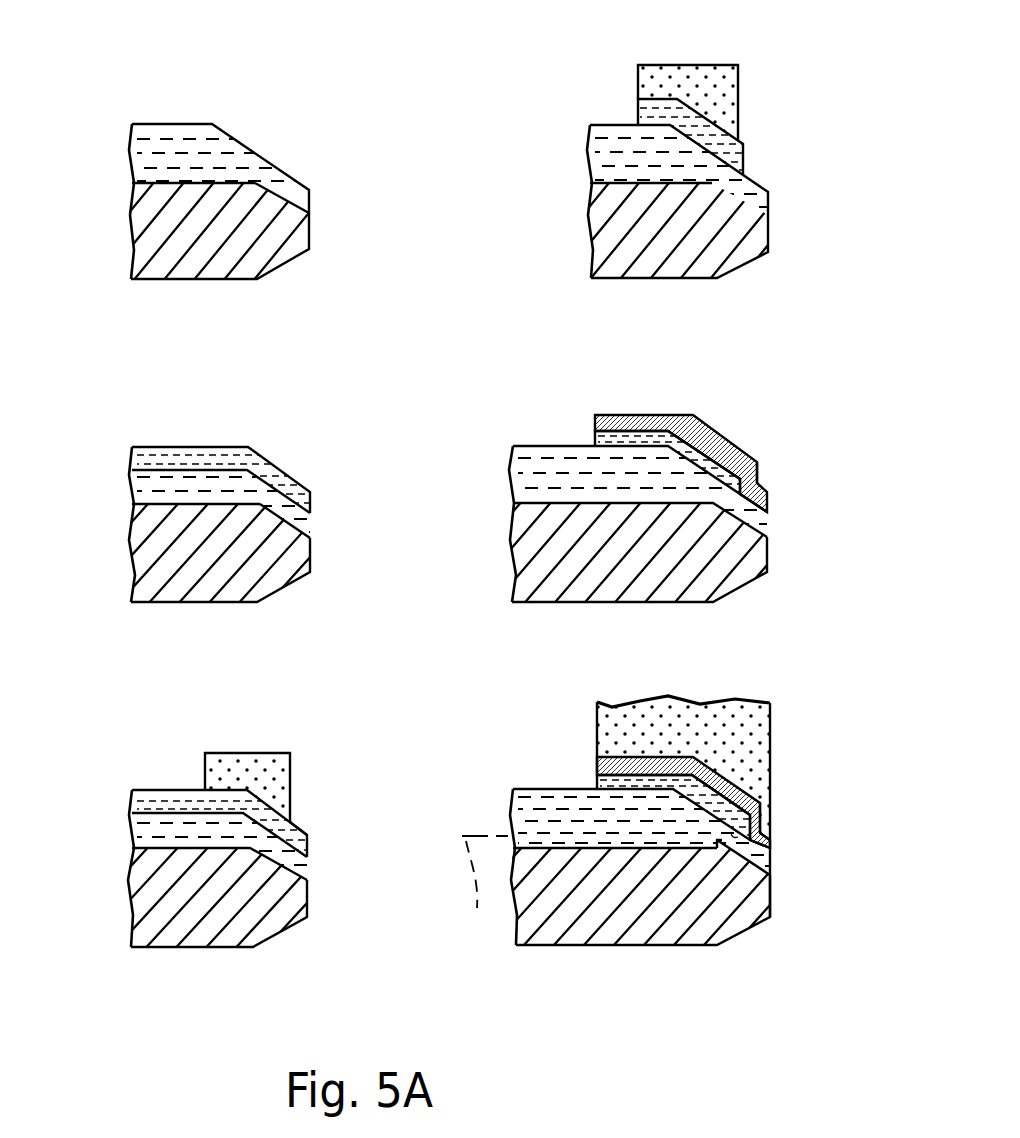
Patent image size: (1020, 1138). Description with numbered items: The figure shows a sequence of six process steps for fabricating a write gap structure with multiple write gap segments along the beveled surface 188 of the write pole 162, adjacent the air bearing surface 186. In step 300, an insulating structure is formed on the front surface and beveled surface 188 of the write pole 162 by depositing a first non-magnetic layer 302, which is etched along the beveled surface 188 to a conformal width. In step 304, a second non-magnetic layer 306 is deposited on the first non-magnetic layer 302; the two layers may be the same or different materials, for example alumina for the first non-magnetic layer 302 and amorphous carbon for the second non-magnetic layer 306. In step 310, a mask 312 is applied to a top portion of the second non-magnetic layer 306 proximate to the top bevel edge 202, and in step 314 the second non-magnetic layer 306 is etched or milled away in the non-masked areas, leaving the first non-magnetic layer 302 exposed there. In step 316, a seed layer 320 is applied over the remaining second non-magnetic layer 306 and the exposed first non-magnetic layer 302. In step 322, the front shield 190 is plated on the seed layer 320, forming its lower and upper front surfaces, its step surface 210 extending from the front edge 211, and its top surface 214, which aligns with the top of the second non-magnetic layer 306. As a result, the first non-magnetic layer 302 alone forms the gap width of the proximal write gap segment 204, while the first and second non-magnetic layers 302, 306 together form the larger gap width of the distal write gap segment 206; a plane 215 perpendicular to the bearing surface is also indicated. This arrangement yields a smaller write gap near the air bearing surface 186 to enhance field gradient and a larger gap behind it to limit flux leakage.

The write pole 162 is at (461, 587).
The air bearing surface 186 is at (309, 231).
The beveled surface 188 is at (303, 194).
The front shield 190 is at (760, 755).
The top bevel edge 202 is at (677, 445).
The proximal write gap segment 204 is at (770, 877).
The distal write gap segment 206 is at (720, 845).
The step surface 210 is at (760, 832).
The front edge 211 is at (731, 833).
The top surface 214 is at (597, 730).
The plane 215 is at (482, 888).
The step 300 is at (312, 157).
The first non-magnetic layer 302 is at (222, 152).
The step 304 is at (332, 452).
The second non-magnetic layer 306 is at (640, 112).
The step 310 is at (338, 781).
The mask 312 is at (662, 75).
The step 314 is at (806, 152).
The step 316 is at (748, 424).
The seed layer 320 is at (758, 465).
The step 322 is at (800, 705).